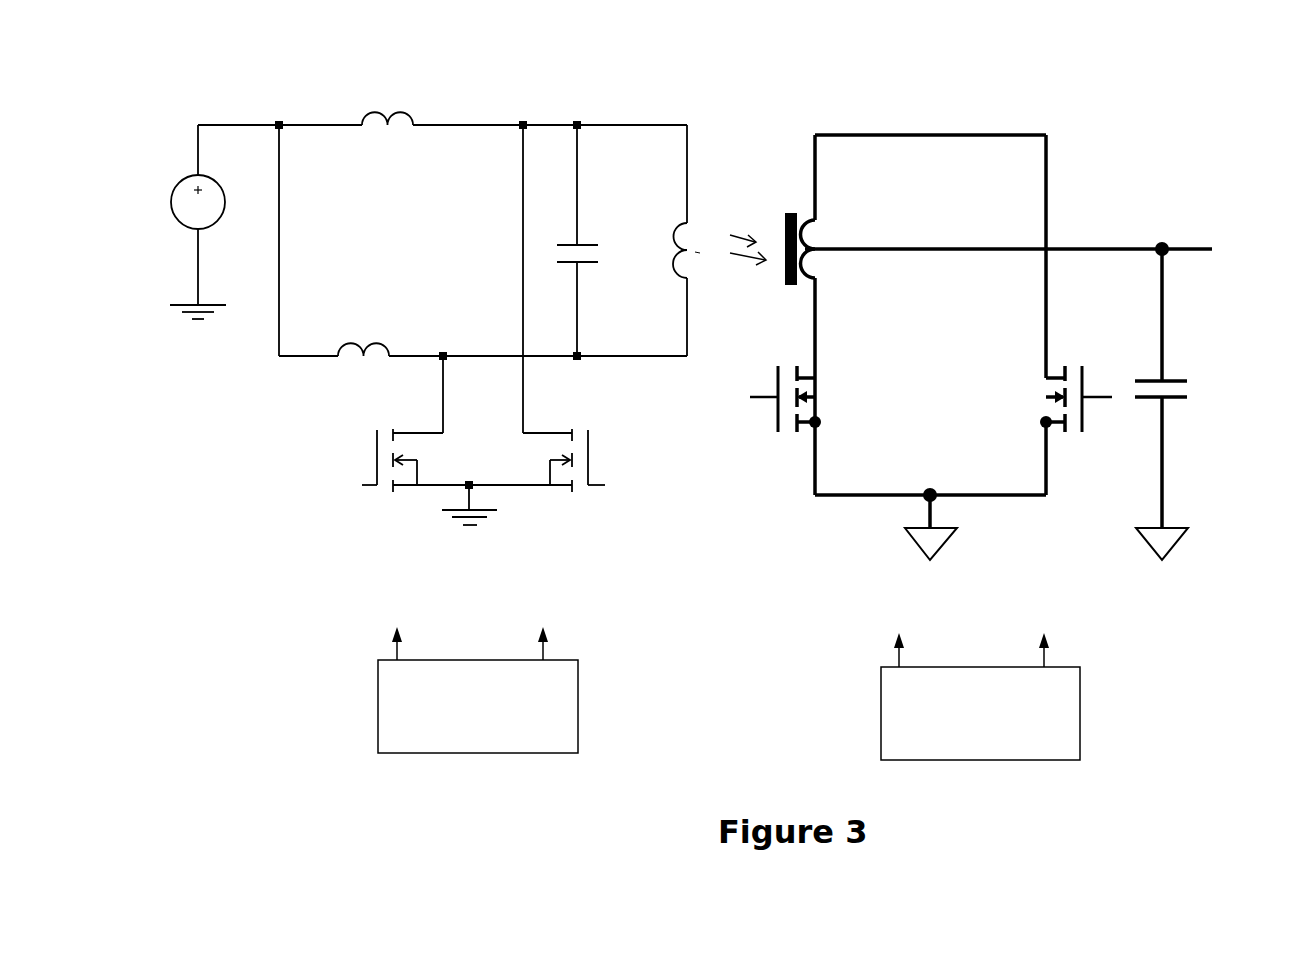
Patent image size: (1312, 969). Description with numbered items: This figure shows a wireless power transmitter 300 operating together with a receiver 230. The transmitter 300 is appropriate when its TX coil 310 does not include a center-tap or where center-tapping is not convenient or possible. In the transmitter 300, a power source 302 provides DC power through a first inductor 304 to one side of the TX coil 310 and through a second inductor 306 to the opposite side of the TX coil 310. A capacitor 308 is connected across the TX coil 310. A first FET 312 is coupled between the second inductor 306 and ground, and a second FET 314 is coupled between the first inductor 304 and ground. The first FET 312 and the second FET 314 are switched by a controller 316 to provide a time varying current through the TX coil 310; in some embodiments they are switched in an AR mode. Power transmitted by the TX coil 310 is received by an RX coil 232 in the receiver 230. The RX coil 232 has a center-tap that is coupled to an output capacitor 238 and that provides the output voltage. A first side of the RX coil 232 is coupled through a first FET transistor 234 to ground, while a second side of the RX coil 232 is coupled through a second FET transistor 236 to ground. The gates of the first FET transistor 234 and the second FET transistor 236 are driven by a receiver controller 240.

The transmitter 300 is at (387, 216).
The power source 302 is at (175, 188).
The inductor 304 is at (403, 98).
The inductor 306 is at (368, 337).
The capacitor 308 is at (585, 223).
The TX coil 310 is at (667, 258).
The FET 312 is at (372, 432).
The FET 314 is at (610, 450).
The controller 316 is at (462, 745).
The receiver 230 is at (1105, 182).
The RX coil 232 is at (788, 187).
The FET transistor 234 is at (765, 435).
The FET transistor 236 is at (1085, 423).
The capacitor 238 is at (1210, 403).
The controller 240 is at (964, 752).